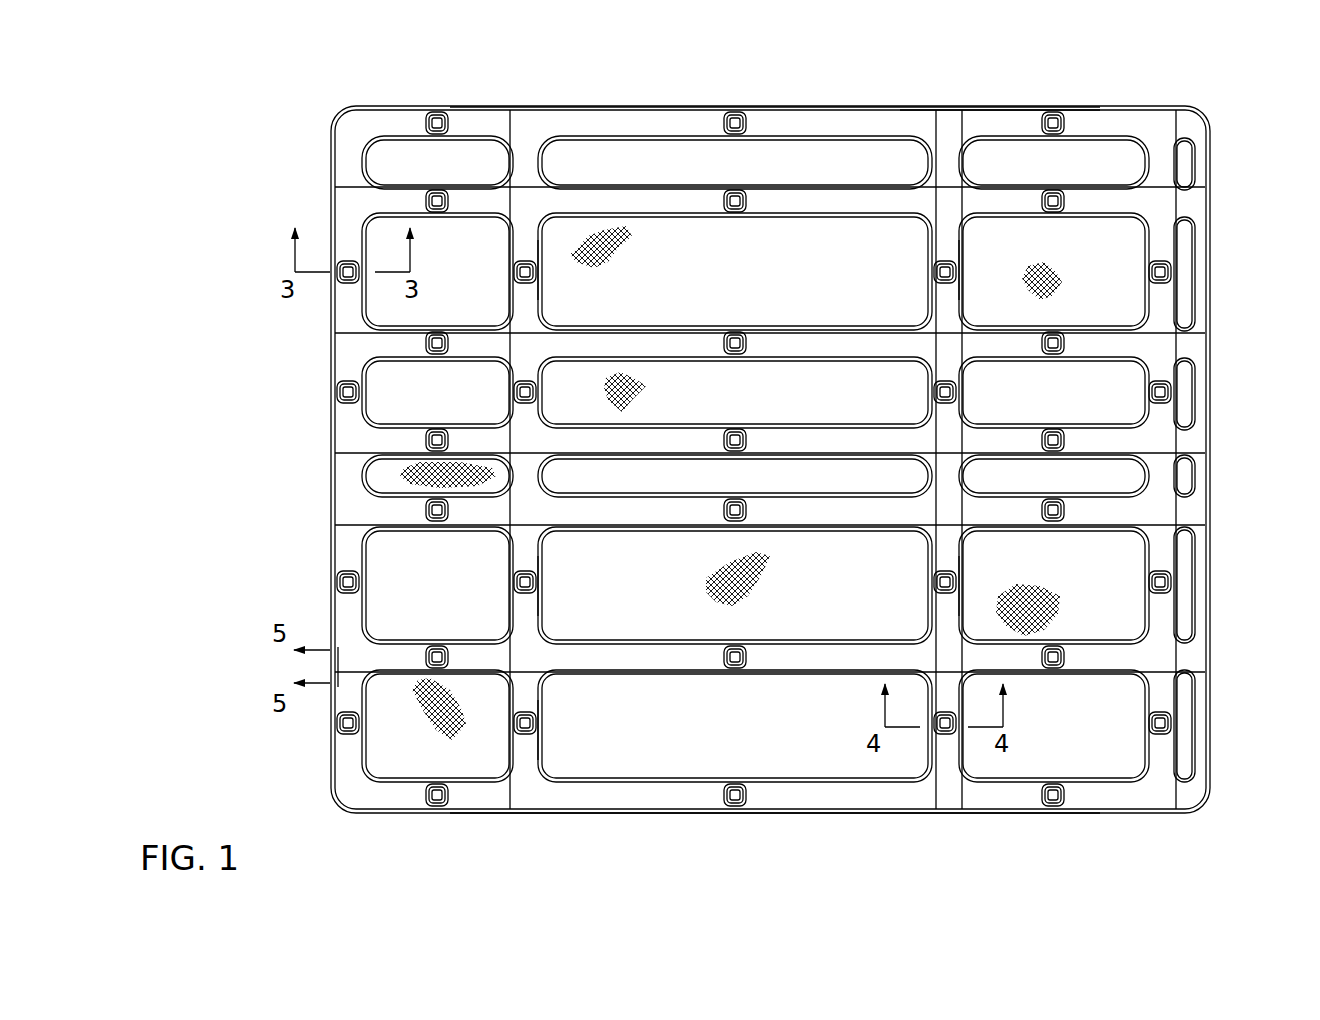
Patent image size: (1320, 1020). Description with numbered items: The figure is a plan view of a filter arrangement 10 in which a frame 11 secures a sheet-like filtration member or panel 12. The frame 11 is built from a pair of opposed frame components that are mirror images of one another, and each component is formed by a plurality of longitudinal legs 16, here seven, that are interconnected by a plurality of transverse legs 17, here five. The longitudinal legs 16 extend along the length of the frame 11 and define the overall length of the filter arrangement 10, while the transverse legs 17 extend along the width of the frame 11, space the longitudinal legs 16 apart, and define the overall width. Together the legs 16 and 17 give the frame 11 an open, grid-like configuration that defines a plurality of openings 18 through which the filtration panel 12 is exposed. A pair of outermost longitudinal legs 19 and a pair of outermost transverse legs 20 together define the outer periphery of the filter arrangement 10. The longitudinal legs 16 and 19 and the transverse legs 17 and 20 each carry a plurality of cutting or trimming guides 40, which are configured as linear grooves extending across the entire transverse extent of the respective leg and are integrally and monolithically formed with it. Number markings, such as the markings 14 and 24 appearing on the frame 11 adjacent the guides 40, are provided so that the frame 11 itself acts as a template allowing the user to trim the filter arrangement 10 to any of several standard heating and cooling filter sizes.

The filter arrangement 10 is at (212, 134).
The frame 11 is at (1006, 106).
The filtration member or panel 12 is at (410, 740).
The compartment row 14 is at (769, 382).
The longitudinal legs 16 is at (784, 220).
The transverse legs 17 is at (546, 300).
The openings 18 is at (874, 150).
The outermost longitudinal legs 19 is at (624, 104).
The outermost transverse legs 20 is at (1214, 420).
The narrow side slot 24 is at (1182, 460).
The cutting or trimming guides 40 is at (352, 180).